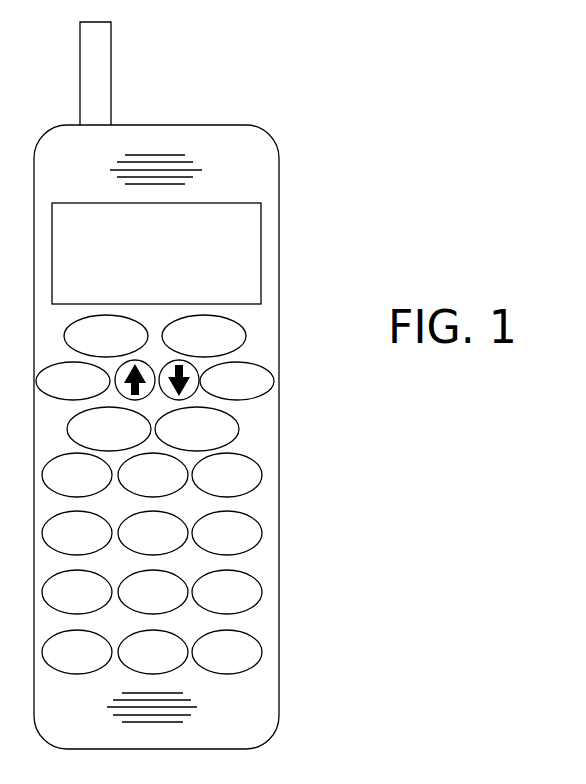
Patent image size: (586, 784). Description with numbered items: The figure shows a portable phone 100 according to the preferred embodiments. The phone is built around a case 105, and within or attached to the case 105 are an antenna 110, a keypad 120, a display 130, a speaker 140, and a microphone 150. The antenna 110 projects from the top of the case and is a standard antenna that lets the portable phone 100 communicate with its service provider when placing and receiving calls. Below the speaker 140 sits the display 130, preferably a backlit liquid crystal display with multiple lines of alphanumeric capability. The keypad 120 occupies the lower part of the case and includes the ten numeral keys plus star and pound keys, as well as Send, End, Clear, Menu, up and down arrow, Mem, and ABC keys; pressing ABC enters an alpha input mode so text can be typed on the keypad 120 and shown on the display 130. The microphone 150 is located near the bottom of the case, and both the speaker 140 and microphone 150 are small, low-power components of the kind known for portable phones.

The portable phone 100 is at (512, 108).
The case 105 is at (280, 310).
The antenna 110 is at (112, 95).
The keypad 120 is at (290, 318).
The display 130 is at (262, 237).
The speaker 140 is at (200, 163).
The microphone 150 is at (197, 715).